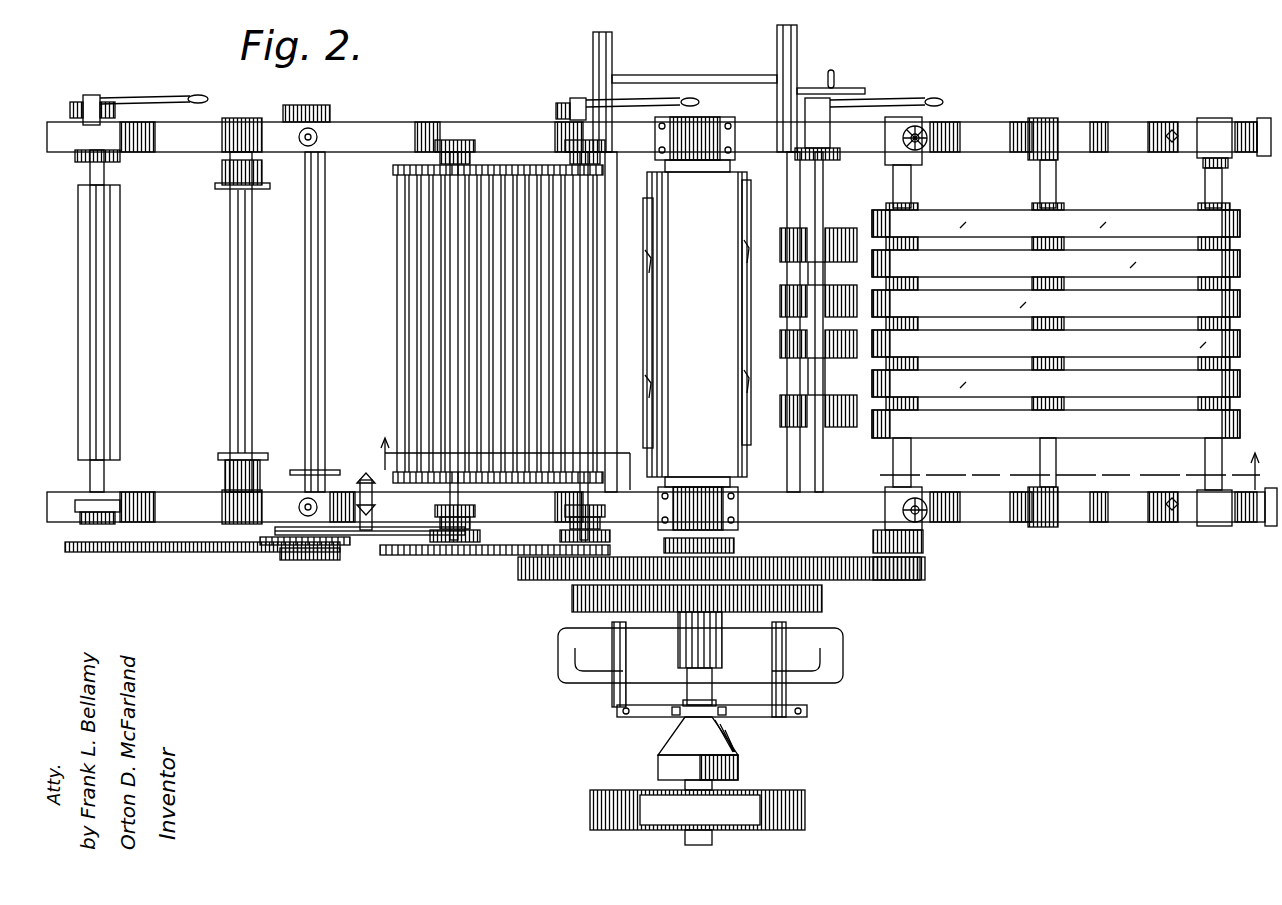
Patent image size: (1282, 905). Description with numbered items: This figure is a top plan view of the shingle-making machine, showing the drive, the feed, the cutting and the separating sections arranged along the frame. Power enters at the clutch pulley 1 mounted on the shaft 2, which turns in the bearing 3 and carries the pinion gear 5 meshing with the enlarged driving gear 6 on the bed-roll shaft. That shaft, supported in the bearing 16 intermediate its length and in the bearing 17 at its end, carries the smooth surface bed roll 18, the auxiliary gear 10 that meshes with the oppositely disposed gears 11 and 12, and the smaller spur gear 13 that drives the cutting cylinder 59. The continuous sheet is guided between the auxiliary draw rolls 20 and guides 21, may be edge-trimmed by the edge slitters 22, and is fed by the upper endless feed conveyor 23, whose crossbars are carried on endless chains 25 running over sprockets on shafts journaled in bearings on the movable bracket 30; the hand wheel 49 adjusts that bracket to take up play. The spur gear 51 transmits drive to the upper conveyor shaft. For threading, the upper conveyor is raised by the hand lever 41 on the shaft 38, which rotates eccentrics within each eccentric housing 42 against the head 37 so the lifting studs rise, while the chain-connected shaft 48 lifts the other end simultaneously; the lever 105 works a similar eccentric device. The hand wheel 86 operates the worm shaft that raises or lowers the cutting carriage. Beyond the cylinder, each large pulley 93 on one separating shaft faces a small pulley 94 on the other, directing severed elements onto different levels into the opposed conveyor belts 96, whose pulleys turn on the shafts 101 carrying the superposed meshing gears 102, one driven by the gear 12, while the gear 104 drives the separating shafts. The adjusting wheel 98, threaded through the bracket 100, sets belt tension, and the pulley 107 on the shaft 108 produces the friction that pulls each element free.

The clutch pulley 1 is at (805, 805).
The shaft 2 is at (712, 683).
The bearing 3 is at (695, 643).
The pinion gear 5 is at (819, 464).
The driving gear 6 is at (828, 610).
The auxiliary gear 10 is at (745, 572).
The gear 11 is at (525, 565).
The gear 12 is at (845, 570).
The spur gear 13 is at (664, 545).
The bearing 16 is at (718, 497).
The bearing 17 is at (712, 125).
The bed roll 18 is at (690, 325).
The auxiliary draw rolls 20 is at (122, 415).
The guides 21 is at (282, 425).
The edge slitters 22 is at (294, 170).
The upper endless feed conveyor 23 is at (400, 283).
The endless chains 25 is at (485, 143).
The bracket 30 is at (380, 520).
The head 37 is at (110, 145).
The shaft 38 is at (588, 195).
The hand lever 41 is at (650, 93).
The eccentric housing 42 is at (84, 130).
The shaft 48 is at (450, 350).
The hand wheel 49 is at (368, 492).
The spur gear 51 is at (550, 110).
The cutting cylinder 59 is at (815, 343).
The hand wheel 86 is at (835, 88).
The large pulley 93 is at (846, 230).
The small pulley 94 is at (790, 300).
The conveyor belts 96 is at (1103, 275).
The adjusting wheel 98 is at (1260, 155).
The bracket 100 is at (1205, 526).
The shaft 101 is at (905, 186).
The gear 102 is at (922, 543).
The gear 104 is at (880, 580).
The lever 105 is at (900, 100).
The pulley 107 is at (1058, 265).
The shaft 108 is at (1042, 188).